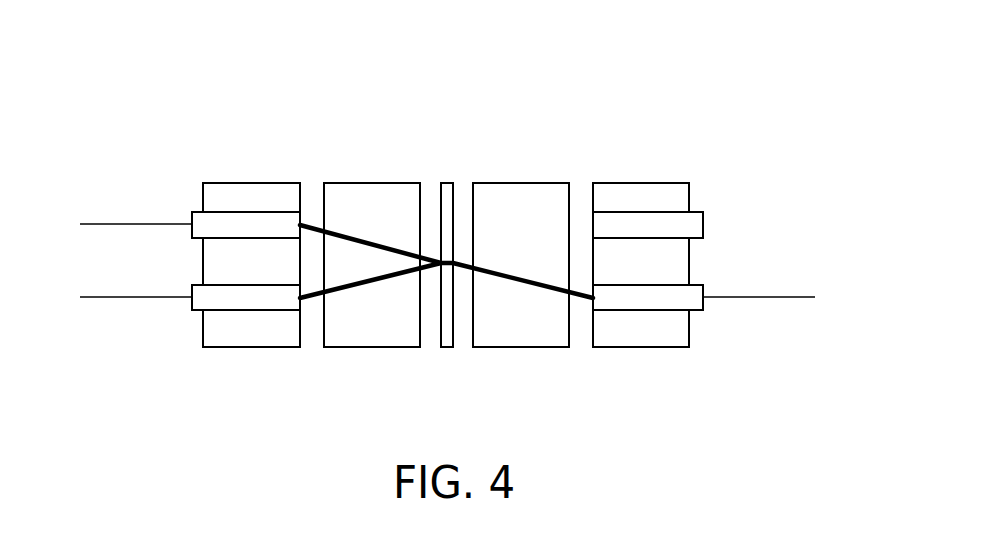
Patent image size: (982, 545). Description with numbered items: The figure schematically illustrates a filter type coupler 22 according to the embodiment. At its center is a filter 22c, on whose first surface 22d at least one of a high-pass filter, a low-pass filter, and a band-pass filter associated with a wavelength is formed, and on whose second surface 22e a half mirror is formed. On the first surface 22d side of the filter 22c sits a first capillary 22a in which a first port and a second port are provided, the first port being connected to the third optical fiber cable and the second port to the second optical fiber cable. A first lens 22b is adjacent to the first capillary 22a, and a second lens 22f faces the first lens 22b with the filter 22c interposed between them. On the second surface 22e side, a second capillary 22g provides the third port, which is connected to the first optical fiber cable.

The filter type coupler 22 is at (724, 88).
The first capillary 22a is at (238, 182).
The first lens 22b is at (356, 182).
The filter 22c is at (445, 182).
The first surface 22d is at (434, 344).
The second surface 22e is at (460, 344).
The second lens 22f is at (507, 182).
The second capillary 22g is at (625, 182).